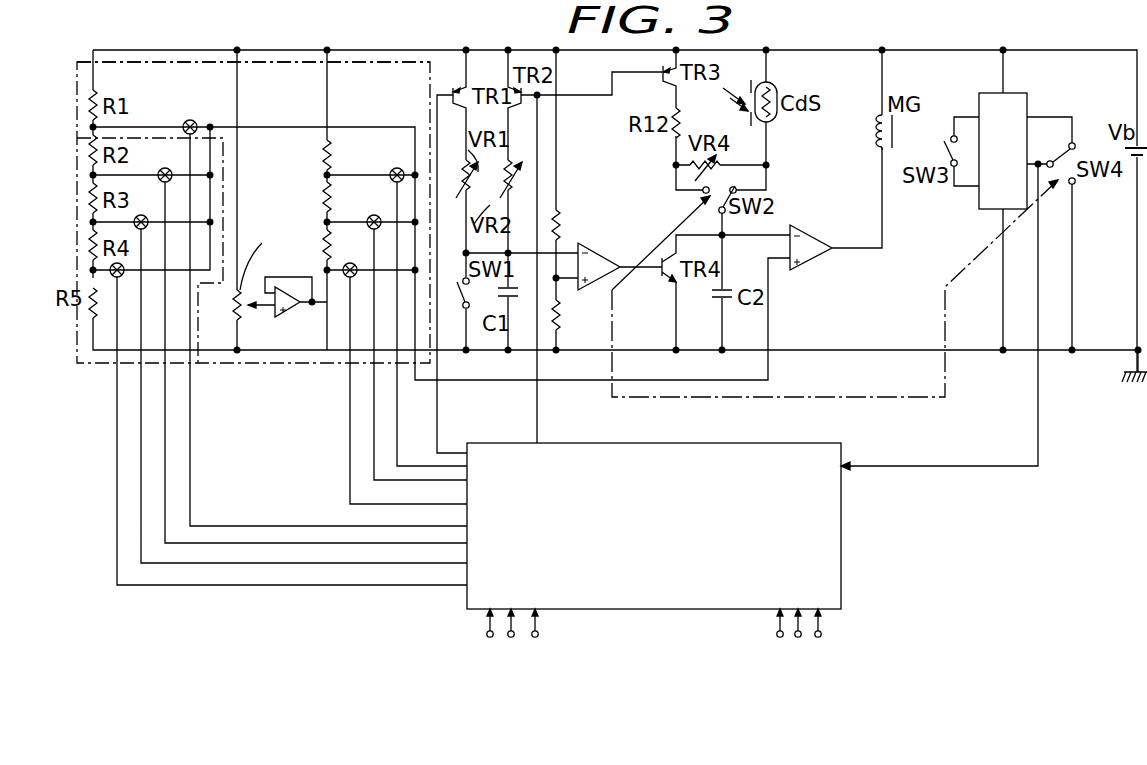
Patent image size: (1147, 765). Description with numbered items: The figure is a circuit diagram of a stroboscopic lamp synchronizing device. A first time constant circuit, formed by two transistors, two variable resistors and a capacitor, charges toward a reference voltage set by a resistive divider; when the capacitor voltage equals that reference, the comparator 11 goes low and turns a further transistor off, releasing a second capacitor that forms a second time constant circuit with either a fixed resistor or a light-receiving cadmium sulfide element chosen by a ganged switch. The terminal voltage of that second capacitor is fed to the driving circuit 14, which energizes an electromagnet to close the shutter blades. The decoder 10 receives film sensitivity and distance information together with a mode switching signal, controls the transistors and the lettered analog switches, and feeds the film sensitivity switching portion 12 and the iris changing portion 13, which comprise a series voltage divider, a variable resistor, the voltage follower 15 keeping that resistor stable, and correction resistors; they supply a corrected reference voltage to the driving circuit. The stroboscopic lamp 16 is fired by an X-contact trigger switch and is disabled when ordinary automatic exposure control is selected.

The decoder 10 is at (843, 530).
The comparator 11 is at (602, 264).
The film sensitivity switching portion 12 is at (306, 61).
The iris changing portion 13 is at (75, 233).
The driving circuit 14 is at (809, 240).
The voltage follower 15 is at (280, 200).
The stroboscopic lamp 16 is at (1019, 101).